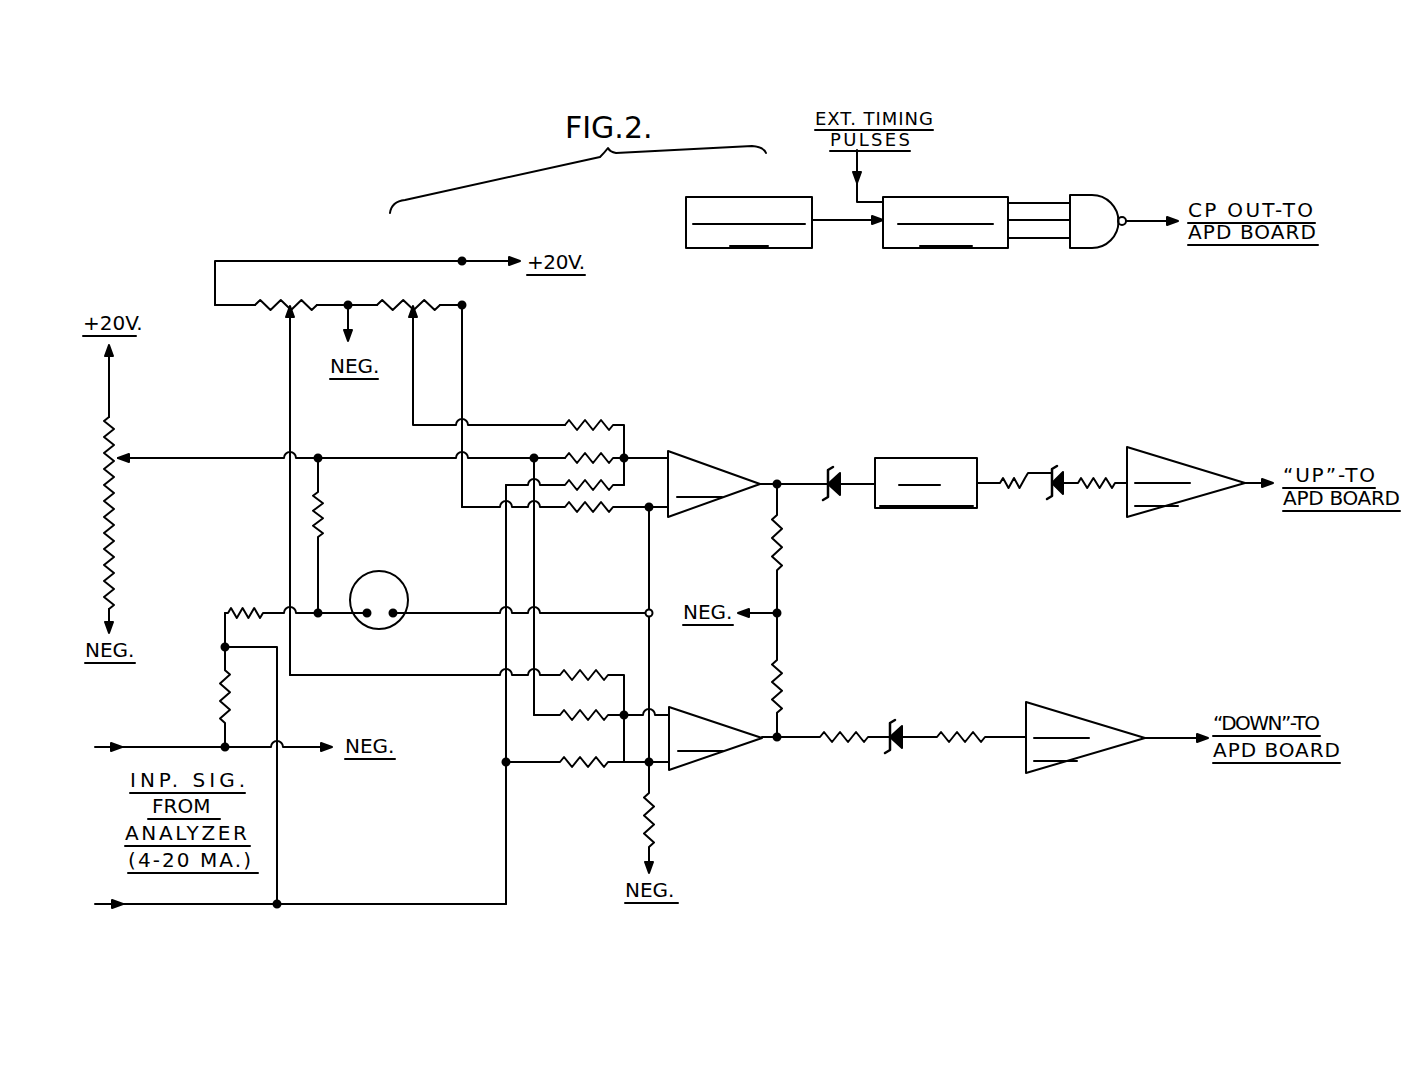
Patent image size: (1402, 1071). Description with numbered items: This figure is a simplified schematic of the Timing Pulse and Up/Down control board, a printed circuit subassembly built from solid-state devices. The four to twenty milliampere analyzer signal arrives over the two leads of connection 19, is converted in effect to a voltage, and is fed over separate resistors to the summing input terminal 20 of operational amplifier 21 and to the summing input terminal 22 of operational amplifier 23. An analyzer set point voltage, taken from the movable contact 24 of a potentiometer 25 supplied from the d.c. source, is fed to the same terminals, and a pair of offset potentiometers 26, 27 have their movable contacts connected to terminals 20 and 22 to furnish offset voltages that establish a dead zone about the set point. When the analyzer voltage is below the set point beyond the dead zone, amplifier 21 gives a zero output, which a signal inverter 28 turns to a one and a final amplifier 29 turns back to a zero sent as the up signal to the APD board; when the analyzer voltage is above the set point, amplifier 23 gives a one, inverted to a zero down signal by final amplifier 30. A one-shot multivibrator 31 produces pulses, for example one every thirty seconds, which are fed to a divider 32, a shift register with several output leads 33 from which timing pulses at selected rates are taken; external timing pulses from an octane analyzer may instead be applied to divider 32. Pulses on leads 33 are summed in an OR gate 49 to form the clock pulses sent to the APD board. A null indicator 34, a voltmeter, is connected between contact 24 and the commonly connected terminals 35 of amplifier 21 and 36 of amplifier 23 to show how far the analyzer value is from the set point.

The connection 19 is at (100, 745).
The summing input terminal 20 is at (624, 457).
The operational amplifier 21 is at (707, 462).
The summing input terminal 22 is at (626, 712).
The operational amplifier 23 is at (718, 706).
The movable contact 24 is at (116, 459).
The potentiometer 25 is at (118, 470).
The offset potentiometer 26 is at (418, 289).
The offset potentiometer 27 is at (281, 300).
The signal inverter 28 is at (922, 458).
The final amplifier 29 is at (1175, 460).
The final amplifier 30 is at (1080, 718).
The one-shot multivibrator 31 is at (738, 195).
The divider 32 is at (955, 196).
The output leads 33 is at (1031, 203).
The null indicator 34 is at (388, 572).
The terminal 35 is at (647, 509).
The terminal 36 is at (646, 764).
The OR gate 49 is at (1098, 195).